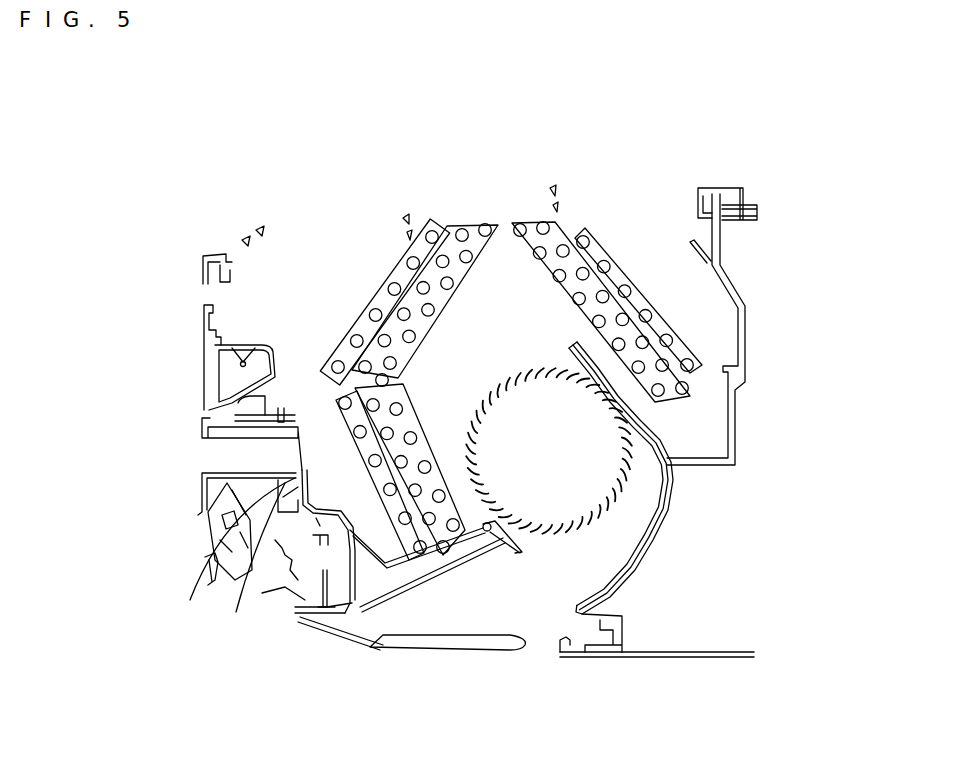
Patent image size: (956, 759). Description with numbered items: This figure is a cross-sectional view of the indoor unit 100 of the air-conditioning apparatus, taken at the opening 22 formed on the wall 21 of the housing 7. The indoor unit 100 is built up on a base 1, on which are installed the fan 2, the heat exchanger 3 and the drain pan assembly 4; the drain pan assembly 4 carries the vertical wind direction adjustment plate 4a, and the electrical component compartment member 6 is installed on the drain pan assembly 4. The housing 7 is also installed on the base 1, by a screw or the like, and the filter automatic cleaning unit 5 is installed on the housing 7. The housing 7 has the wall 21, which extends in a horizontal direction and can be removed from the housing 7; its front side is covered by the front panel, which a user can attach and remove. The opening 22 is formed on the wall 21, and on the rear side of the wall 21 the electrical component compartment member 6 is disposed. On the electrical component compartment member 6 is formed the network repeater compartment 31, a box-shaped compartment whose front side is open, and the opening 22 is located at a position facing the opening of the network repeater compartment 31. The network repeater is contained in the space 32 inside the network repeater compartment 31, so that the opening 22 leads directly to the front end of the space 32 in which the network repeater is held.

The indoor unit 100 is at (160, 201).
The base 1 is at (737, 305).
The fan 2 is at (623, 466).
The heat exchanger 3 is at (476, 237).
The drain pan assembly 4 is at (390, 566).
The vertical wind direction adjustment plate 4a is at (430, 655).
The filter automatic cleaning unit 5 is at (278, 212).
The electrical component compartment member 6 is at (256, 552).
The housing 7 is at (203, 423).
The wall 21 is at (203, 498).
The opening 22 is at (207, 449).
The network repeater compartment 31 is at (210, 572).
The space 32 is at (227, 452).